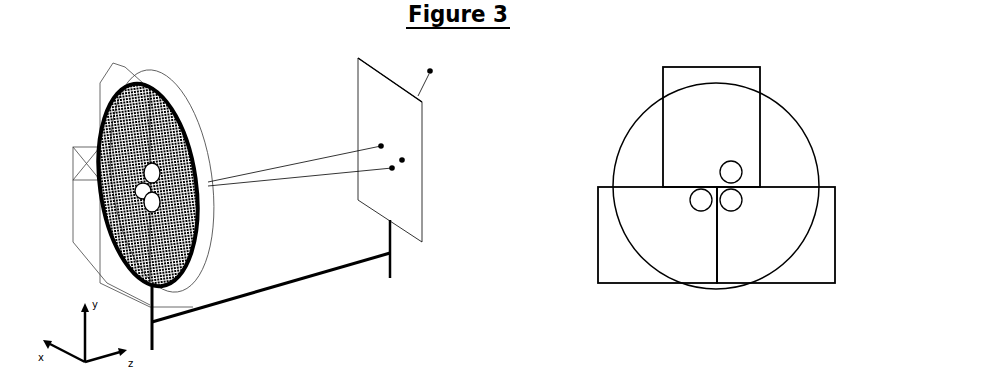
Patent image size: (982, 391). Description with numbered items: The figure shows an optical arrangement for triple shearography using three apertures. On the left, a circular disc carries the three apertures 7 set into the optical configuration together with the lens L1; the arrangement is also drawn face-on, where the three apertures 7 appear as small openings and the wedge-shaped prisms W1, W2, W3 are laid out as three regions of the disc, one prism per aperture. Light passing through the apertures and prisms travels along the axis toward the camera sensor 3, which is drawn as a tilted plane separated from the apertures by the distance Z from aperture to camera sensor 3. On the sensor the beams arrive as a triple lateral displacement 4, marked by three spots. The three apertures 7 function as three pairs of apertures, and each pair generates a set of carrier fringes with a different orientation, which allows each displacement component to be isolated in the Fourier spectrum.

The three apertures 7 is at (173, 118).
The lens L1 is at (190, 122).
The camera sensor 3 is at (402, 150).
The triple lateral displacement 4 is at (435, 65).
The distance from aperture to camera sensor Z is at (271, 285).
The wedge-shaped prism W1 is at (637, 245).
The wedge-shaped prism W2 is at (800, 245).
The wedge-shaped prism W3 is at (733, 122).